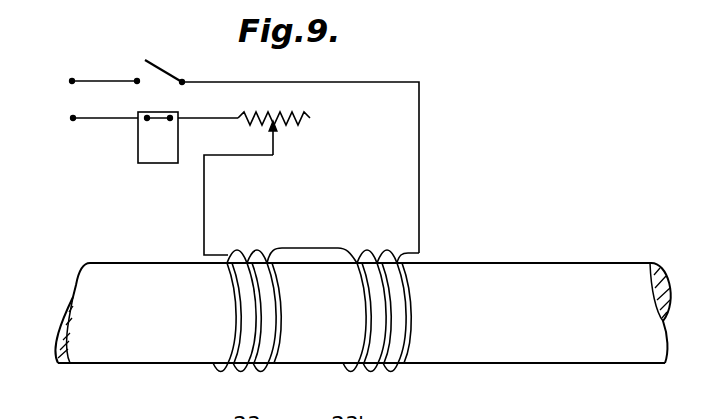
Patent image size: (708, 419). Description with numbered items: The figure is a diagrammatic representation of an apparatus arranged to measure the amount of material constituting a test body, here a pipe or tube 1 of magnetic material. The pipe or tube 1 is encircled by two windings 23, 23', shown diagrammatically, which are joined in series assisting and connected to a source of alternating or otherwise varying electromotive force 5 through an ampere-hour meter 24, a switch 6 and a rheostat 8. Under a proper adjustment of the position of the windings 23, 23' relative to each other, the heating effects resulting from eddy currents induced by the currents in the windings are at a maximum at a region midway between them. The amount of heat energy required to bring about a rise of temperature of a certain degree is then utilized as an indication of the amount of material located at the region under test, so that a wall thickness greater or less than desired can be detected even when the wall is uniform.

The pipe or tube 1 is at (532, 264).
The source of alternating or otherwise varying electromotive force 5 is at (78, 110).
The switch 6 is at (282, 151).
The rheostat 8 is at (283, 117).
The ampere-hour meter 24 is at (188, 137).
The winding 23 is at (275, 294).
The winding 23' is at (378, 294).